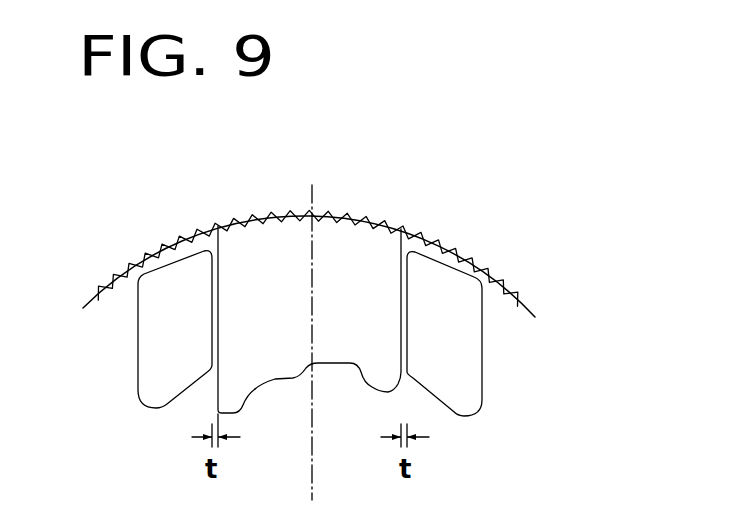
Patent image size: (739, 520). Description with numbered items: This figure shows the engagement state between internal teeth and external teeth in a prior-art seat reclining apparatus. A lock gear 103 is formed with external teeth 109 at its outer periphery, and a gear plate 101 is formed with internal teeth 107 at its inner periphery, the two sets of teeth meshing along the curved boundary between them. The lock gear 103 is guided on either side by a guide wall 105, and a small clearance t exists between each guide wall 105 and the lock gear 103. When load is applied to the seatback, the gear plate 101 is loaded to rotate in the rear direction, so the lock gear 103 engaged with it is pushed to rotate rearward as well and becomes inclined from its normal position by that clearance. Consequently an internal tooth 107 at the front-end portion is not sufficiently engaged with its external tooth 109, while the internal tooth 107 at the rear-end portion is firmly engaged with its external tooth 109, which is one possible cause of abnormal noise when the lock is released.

The gear plate 101 is at (358, 188).
The lock gear 103 is at (287, 236).
The guide wall 105 is at (163, 339).
The internal teeth 107 is at (247, 220).
The external teeth 109 is at (260, 217).